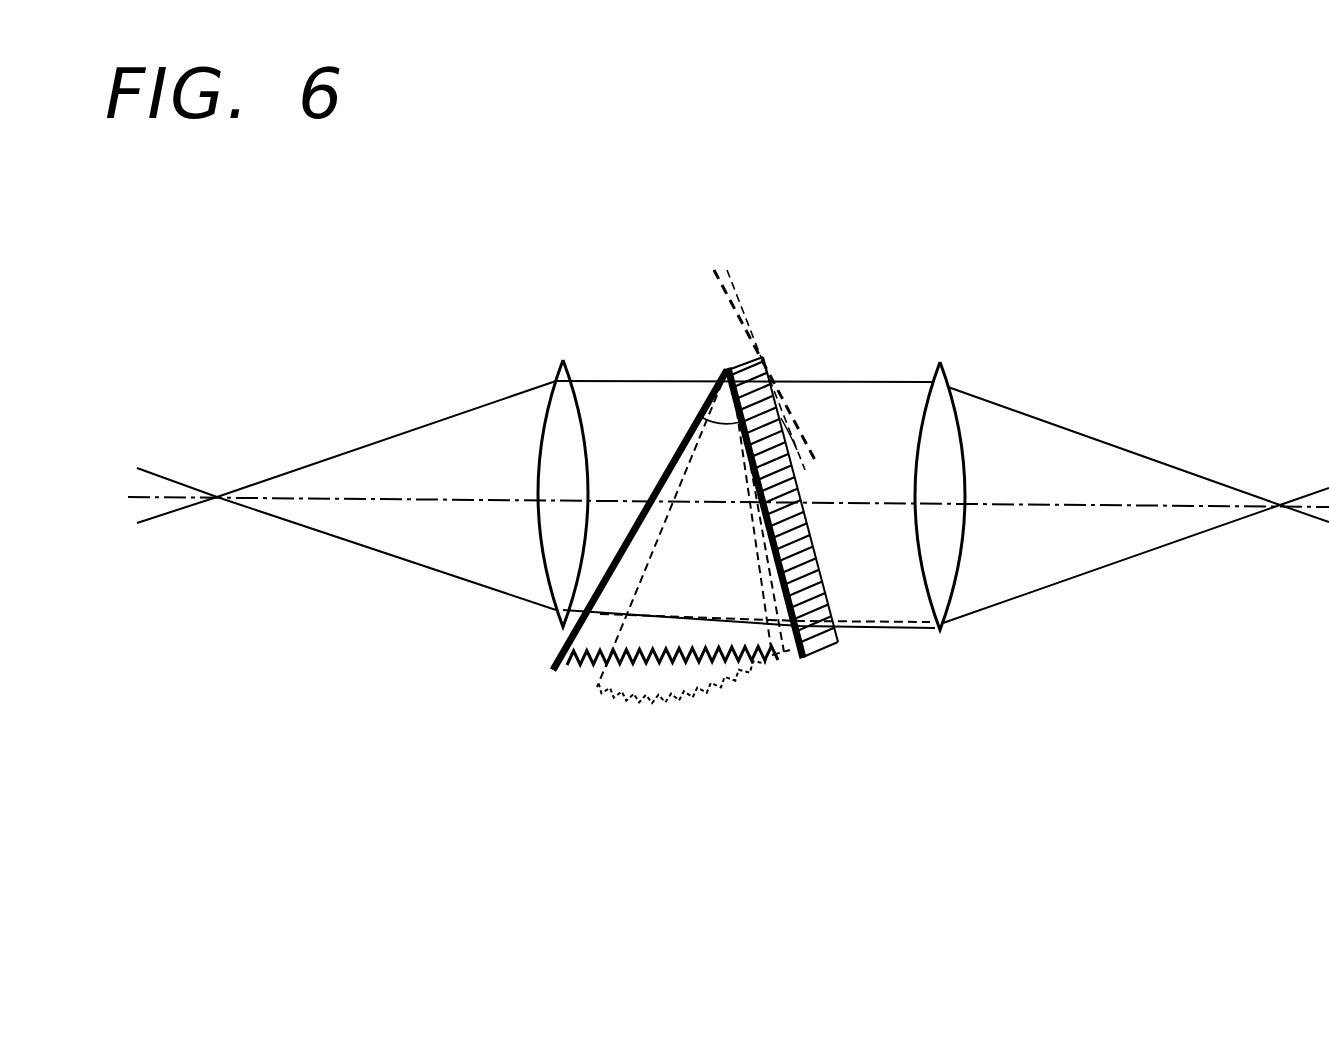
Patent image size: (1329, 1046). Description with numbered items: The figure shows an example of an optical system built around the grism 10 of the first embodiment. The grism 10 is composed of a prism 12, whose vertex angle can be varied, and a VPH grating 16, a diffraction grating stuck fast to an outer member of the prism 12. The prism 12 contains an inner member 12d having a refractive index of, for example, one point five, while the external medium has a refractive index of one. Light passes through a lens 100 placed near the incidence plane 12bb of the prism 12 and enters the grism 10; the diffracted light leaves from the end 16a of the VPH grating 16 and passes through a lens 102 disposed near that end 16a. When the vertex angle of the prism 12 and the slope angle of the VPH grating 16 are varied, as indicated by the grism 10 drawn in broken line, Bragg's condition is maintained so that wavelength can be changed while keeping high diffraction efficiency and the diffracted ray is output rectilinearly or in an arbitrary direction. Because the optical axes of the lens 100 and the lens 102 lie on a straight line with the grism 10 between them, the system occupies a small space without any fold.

The grism 10 is at (718, 514).
The prism 12 is at (654, 566).
The incidence plane 12bb is at (690, 428).
The inner member 12d is at (597, 652).
The VPH grating 16 is at (817, 507).
The end of the VPH grating 16a is at (808, 517).
The lens 100 is at (550, 547).
The lens 102 is at (952, 537).